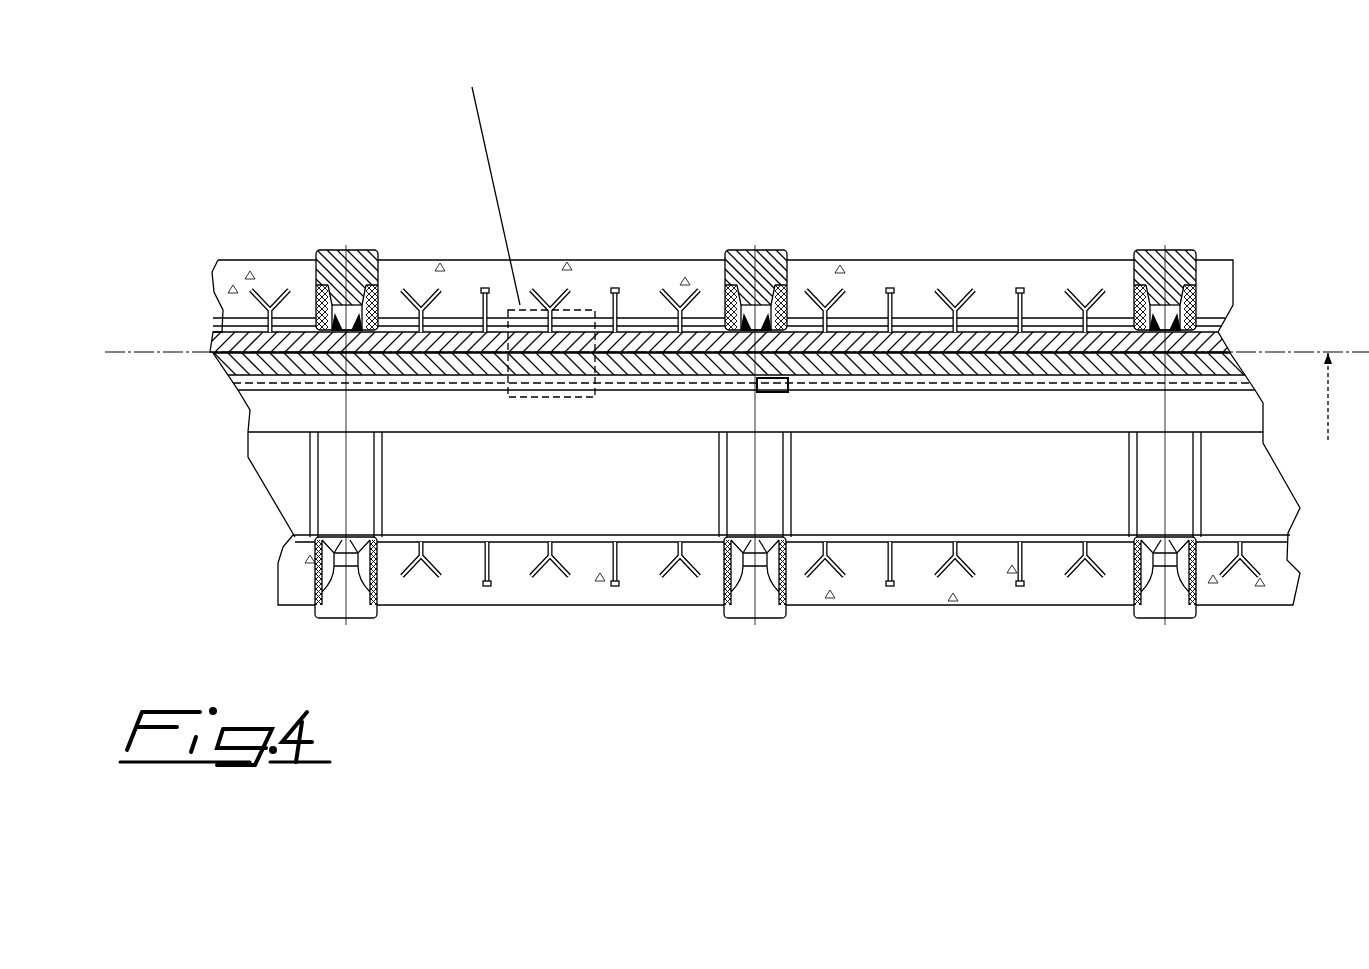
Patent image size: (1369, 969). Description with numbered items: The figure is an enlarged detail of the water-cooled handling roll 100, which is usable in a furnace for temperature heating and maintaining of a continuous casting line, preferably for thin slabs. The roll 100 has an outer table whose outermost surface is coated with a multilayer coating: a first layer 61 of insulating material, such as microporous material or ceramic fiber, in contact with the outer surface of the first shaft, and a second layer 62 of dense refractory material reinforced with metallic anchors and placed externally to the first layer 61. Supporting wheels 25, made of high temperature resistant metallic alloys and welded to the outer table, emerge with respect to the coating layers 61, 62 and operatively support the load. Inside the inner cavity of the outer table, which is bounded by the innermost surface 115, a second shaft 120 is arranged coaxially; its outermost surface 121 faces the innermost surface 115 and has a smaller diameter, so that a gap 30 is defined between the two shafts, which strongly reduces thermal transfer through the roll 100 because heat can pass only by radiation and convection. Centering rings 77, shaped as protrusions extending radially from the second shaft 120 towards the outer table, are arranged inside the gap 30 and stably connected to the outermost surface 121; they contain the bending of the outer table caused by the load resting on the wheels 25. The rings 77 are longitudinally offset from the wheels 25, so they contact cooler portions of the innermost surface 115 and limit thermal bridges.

The handling roll 100 is at (732, 342).
The supporting wheels 25 is at (328, 255).
The gap 30 is at (440, 358).
The centering rings 77 is at (568, 347).
The outermost surface of the second shaft 121 is at (160, 352).
The second shaft 120 is at (285, 365).
The second layer 62 is at (865, 272).
The first layer 61 is at (985, 322).
The innermost surface 115 is at (1326, 413).